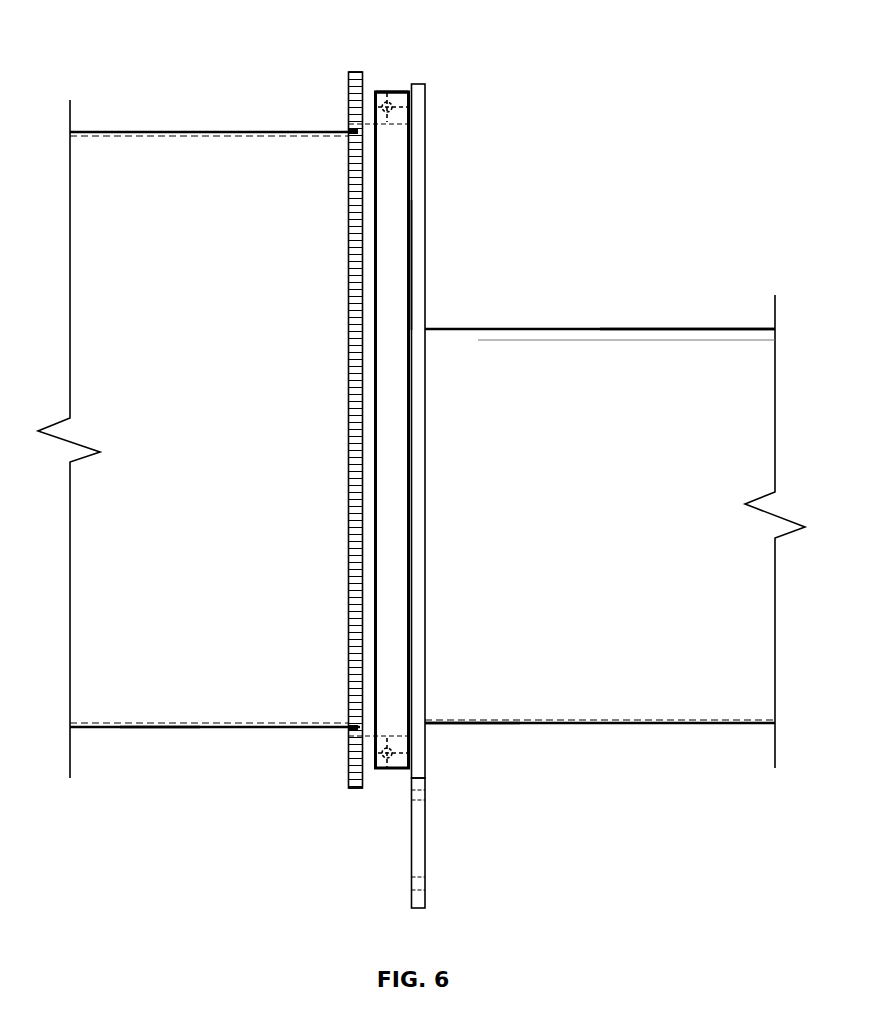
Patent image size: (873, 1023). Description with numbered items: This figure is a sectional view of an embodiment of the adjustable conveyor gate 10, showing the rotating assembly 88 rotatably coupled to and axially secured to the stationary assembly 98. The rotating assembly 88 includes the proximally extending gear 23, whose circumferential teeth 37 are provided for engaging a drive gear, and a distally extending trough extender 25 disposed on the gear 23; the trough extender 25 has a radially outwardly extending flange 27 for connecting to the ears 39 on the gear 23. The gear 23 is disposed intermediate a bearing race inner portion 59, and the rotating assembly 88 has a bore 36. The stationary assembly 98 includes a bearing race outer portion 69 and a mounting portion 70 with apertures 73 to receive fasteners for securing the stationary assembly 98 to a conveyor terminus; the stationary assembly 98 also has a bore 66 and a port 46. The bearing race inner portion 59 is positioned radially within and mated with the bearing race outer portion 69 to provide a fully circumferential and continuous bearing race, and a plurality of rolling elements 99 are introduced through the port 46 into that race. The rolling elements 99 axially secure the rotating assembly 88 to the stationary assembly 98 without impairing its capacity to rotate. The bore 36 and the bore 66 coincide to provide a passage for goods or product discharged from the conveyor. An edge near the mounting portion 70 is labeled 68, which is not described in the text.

The adjustable conveyor gate 10 is at (534, 300).
The proximally extending gear 23 is at (348, 271).
The trough extender 25 is at (146, 728).
The radially outwardly extending flange 27 is at (378, 132).
The bore 36 is at (476, 462).
The circumferential teeth 37 is at (352, 71).
The ears 39 is at (349, 129).
The port 46 is at (410, 90).
The bearing race inner portion 59 is at (393, 112).
The bore 66 is at (500, 210).
The panel bottom edge 68 is at (426, 742).
The bearing race outer portion 69 is at (387, 100).
The mounting portion 70 is at (426, 848).
The apertures 73 is at (420, 800).
The rotating assembly 88 is at (178, 90).
The stationary assembly 98 is at (502, 88).
The rolling elements 99 is at (380, 740).